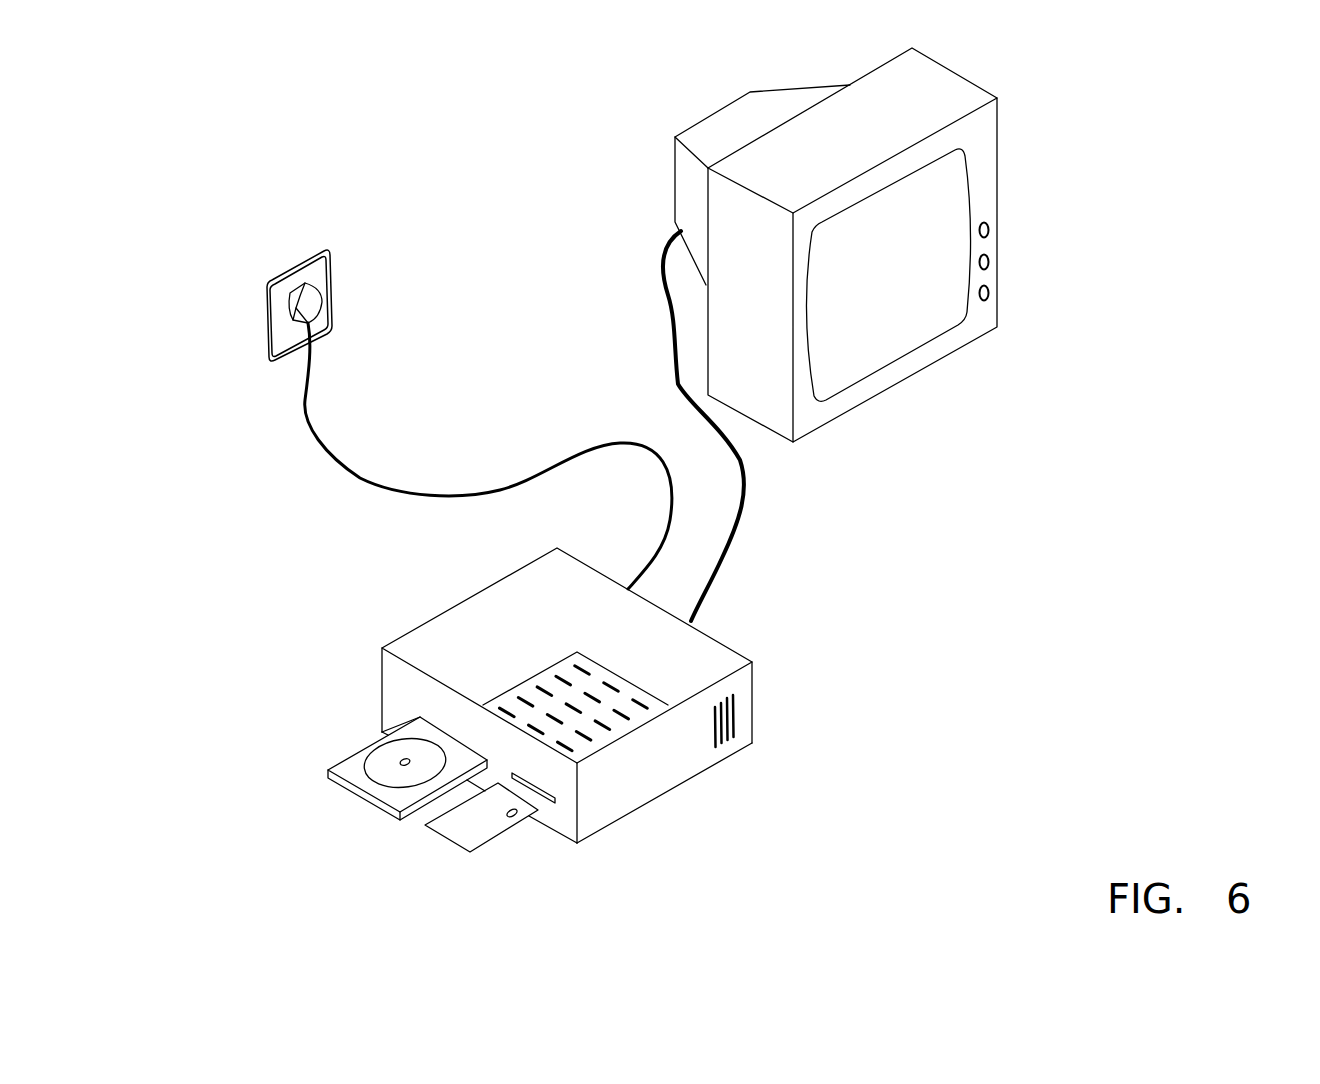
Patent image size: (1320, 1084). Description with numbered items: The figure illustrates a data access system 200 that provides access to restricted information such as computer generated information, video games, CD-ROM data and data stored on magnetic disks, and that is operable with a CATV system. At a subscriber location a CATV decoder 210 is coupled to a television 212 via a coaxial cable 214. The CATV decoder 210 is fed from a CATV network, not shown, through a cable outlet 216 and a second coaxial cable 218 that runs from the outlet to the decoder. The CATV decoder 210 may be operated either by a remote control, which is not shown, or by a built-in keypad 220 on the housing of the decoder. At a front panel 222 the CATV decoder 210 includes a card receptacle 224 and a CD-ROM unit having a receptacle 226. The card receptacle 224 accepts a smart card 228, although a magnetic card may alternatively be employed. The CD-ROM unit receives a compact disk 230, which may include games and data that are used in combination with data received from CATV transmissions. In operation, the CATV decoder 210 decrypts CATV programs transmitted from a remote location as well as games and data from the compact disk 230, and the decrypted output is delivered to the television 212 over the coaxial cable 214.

The data access system 200 is at (836, 748).
The CATV decoder 210 is at (486, 602).
The television 212 is at (985, 160).
The coaxial cable 214 is at (742, 528).
The cable outlet 216 is at (290, 347).
The coaxial cable 218 is at (340, 480).
The built-in keypad 220 is at (590, 747).
The front panel 222 is at (568, 830).
The card receptacle 224 is at (554, 803).
The receptacle 226 is at (420, 712).
The smart card 228 is at (452, 830).
The compact disk 230 is at (387, 777).